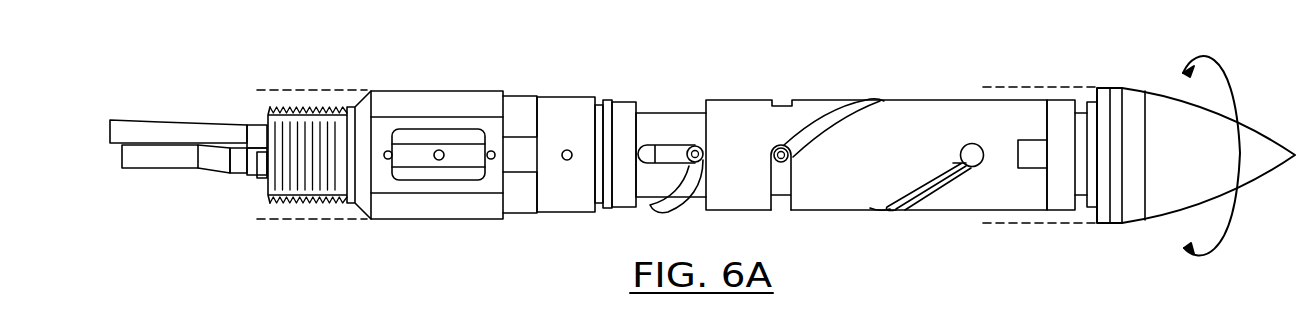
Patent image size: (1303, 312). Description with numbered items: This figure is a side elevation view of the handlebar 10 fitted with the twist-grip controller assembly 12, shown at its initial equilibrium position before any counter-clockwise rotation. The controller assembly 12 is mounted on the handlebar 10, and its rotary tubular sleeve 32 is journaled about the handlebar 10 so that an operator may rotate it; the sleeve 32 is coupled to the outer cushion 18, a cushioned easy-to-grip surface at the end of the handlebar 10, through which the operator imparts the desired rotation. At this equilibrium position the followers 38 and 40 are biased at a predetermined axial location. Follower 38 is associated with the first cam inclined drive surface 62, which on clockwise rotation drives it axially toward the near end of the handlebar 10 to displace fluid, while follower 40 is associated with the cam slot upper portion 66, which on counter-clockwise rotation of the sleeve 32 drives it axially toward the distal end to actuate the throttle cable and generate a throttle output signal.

The handlebar 10 is at (313, 88).
The twist-grip controller assembly 12 is at (832, 88).
The outer cushion 18 is at (1033, 85).
The rotary tubular sleeve 32 is at (897, 118).
The follower 38 is at (690, 150).
The follower 40 is at (777, 145).
The first cam inclined drive surface 62 is at (663, 203).
The cam slot upper portion 66 is at (832, 105).